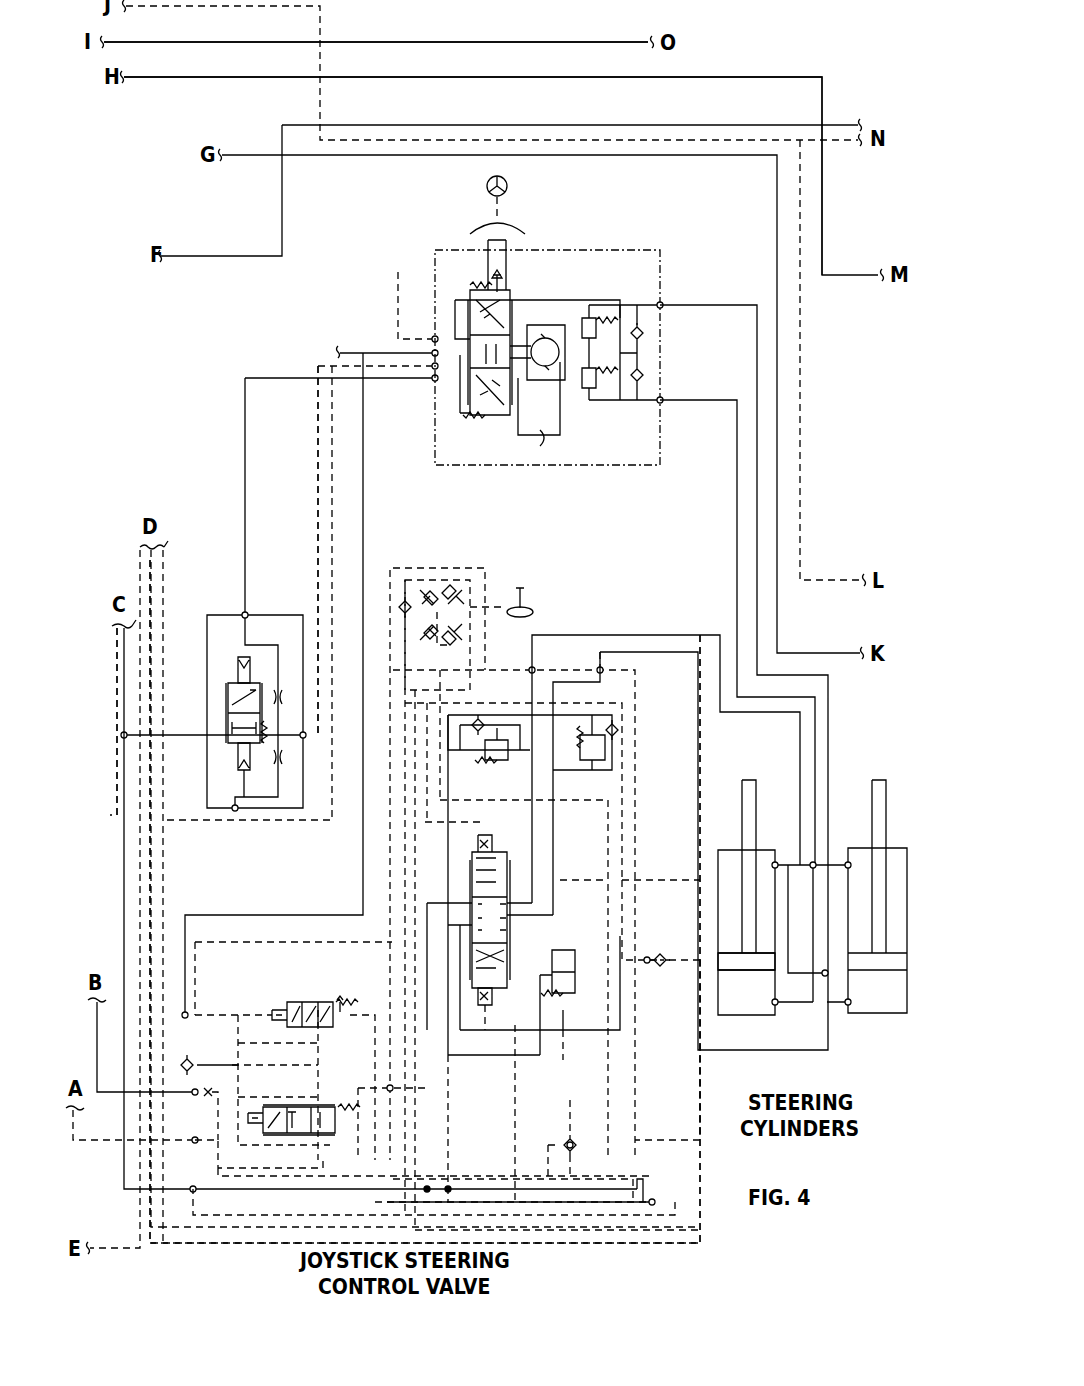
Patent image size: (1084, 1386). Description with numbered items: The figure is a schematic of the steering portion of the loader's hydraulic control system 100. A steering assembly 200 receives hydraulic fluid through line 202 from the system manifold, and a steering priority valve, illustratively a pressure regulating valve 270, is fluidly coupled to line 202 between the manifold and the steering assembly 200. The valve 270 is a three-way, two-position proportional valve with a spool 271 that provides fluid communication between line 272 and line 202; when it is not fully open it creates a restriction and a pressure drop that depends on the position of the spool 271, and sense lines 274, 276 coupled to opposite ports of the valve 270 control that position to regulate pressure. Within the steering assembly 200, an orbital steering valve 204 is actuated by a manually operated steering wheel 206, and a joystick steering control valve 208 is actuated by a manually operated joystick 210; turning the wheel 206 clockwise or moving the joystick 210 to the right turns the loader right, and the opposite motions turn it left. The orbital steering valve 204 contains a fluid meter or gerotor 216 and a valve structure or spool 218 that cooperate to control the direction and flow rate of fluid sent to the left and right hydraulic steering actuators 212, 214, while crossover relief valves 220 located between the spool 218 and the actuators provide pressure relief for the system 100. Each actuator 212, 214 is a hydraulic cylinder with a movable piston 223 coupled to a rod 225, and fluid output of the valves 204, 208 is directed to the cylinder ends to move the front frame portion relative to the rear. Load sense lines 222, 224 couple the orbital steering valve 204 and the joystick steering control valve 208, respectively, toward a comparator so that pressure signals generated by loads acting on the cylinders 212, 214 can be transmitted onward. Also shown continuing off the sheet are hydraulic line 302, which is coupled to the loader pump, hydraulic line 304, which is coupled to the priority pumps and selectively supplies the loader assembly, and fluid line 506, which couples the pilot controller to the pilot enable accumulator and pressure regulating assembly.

The hydraulic control system 100 is at (222, 1254).
The steering assembly 200 is at (632, 1252).
The line 202 is at (122, 912).
The orbital steering valve 204 is at (546, 365).
The steering wheel 206 is at (485, 189).
The joystick steering control valve 208 is at (510, 1272).
The joystick 210 is at (530, 598).
The left hydraulic steering actuator 212 is at (711, 935).
The right hydraulic steering actuator 214 is at (880, 780).
The gerotor 216 is at (548, 340).
The spool 218 is at (508, 295).
The crossover relief valves 220 is at (607, 304).
The load sense line 222 is at (116, 790).
The piston 223 is at (712, 960).
The load sense line 224 is at (94, 1060).
The rod 225 is at (740, 815).
The pressure regulating valve 270 is at (216, 719).
The spool 271 is at (254, 685).
The line 272 is at (316, 496).
The sense line 274 is at (244, 648).
The sense line 276 is at (240, 768).
The hydraulic line 302 is at (498, 40).
The hydraulic line 304 is at (741, 76).
The fluid line 506 is at (222, 258).